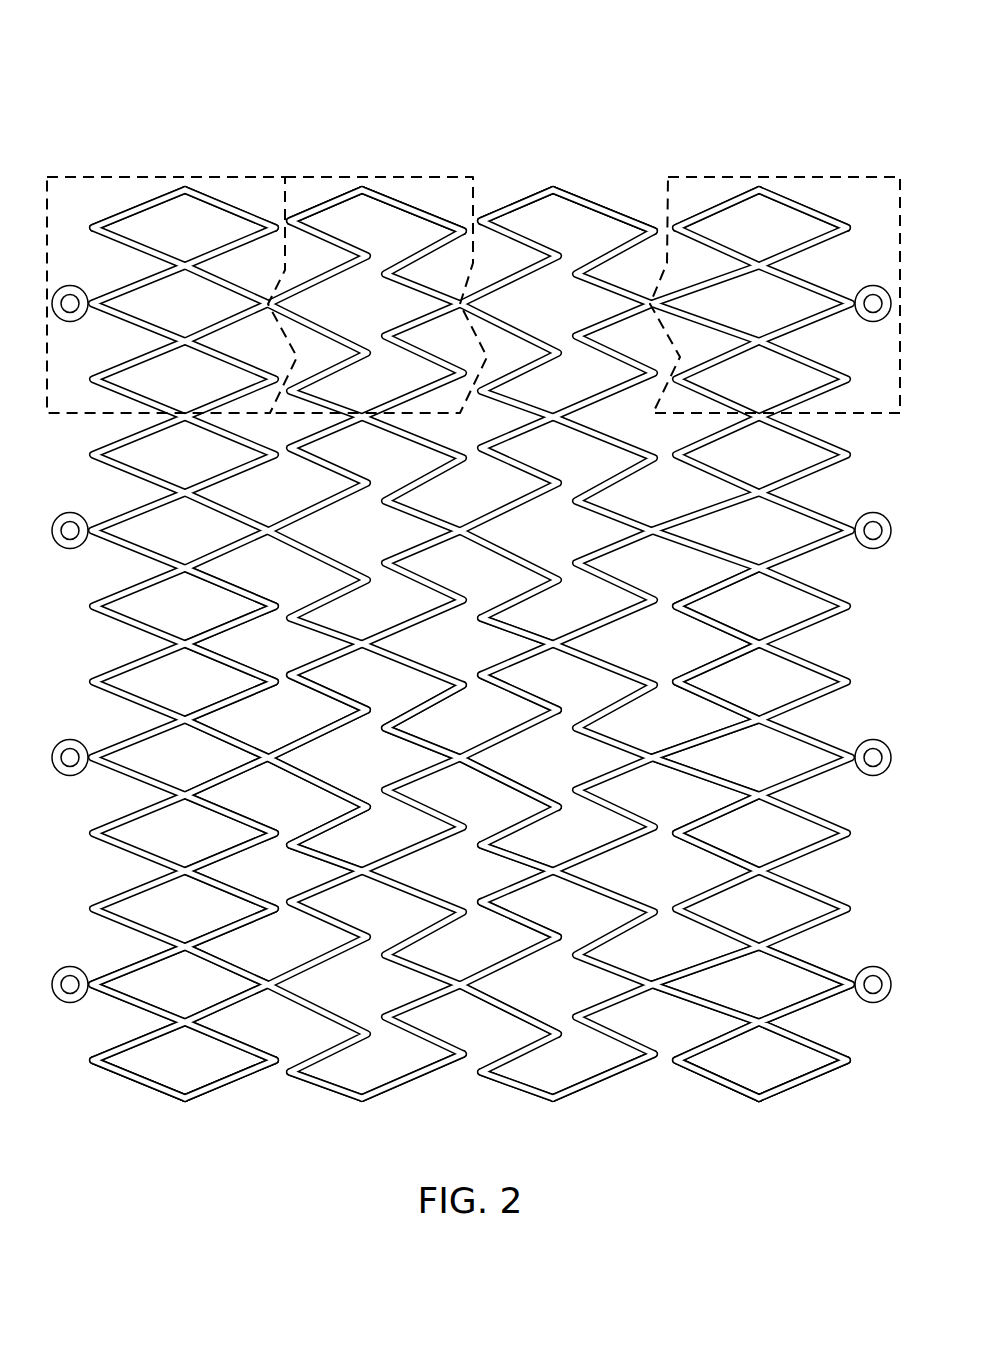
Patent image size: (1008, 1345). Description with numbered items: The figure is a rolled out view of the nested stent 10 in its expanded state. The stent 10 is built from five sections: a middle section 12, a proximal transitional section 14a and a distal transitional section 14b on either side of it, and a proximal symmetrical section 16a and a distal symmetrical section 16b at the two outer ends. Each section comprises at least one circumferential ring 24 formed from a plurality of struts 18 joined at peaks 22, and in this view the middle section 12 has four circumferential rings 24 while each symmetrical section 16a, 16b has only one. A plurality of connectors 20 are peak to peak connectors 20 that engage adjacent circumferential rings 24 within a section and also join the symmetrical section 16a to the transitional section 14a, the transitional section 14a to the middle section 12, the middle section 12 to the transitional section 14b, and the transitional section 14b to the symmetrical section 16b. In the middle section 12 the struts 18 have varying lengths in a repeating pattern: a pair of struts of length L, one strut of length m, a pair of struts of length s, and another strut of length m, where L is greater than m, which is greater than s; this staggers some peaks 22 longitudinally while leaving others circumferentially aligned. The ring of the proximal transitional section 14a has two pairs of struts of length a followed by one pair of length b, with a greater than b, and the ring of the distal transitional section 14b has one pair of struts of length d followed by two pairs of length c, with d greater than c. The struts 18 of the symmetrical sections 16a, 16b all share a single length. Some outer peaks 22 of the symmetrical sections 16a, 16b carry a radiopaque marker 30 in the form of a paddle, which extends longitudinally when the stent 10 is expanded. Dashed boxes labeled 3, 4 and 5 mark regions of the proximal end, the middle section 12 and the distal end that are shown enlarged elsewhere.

The nested stent 10 is at (560, 84).
The middle section 12 is at (660, 1108).
The proximal transitional section 14a is at (243, 1093).
The distal transitional section 14b is at (705, 1093).
The proximal symmetrical section 16a is at (130, 1093).
The distal symmetrical section 16b is at (816, 1093).
The struts 18 is at (230, 656).
The connectors 20 is at (264, 977).
The peaks 22 is at (376, 708).
The circumferential ring 24 is at (238, 194).
The radiopaque marker 30 is at (70, 550).
The detail region shown in FIG. 3 is at (190, 177).
The detail region shown in FIG. 4 is at (368, 177).
The detail region shown in FIG. 5 is at (771, 177).
The length a is at (232, 612).
The length b is at (226, 762).
The length c is at (710, 612).
The length d is at (704, 762).
The length s is at (508, 650).
The length m is at (527, 692).
The length l L is at (500, 768).